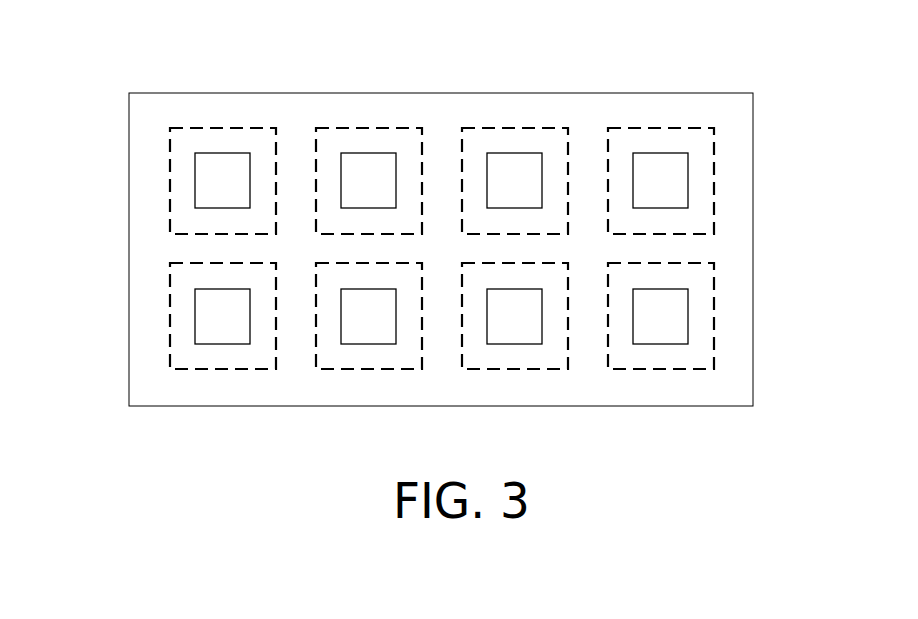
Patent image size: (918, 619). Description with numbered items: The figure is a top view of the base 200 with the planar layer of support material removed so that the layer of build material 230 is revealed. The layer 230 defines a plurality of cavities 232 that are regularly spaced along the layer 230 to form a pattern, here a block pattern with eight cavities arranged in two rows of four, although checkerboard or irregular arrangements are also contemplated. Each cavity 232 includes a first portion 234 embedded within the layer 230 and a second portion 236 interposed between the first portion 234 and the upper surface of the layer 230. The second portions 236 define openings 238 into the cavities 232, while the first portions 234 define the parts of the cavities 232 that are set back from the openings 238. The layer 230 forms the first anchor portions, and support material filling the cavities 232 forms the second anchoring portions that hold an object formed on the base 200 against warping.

The base 200 is at (150, 68).
The layer of build material 230 is at (687, 105).
The cavity 232 is at (441, 250).
The opening 238 is at (441, 250).
The second portion 236 is at (658, 153).
The first portion 234 is at (330, 236).